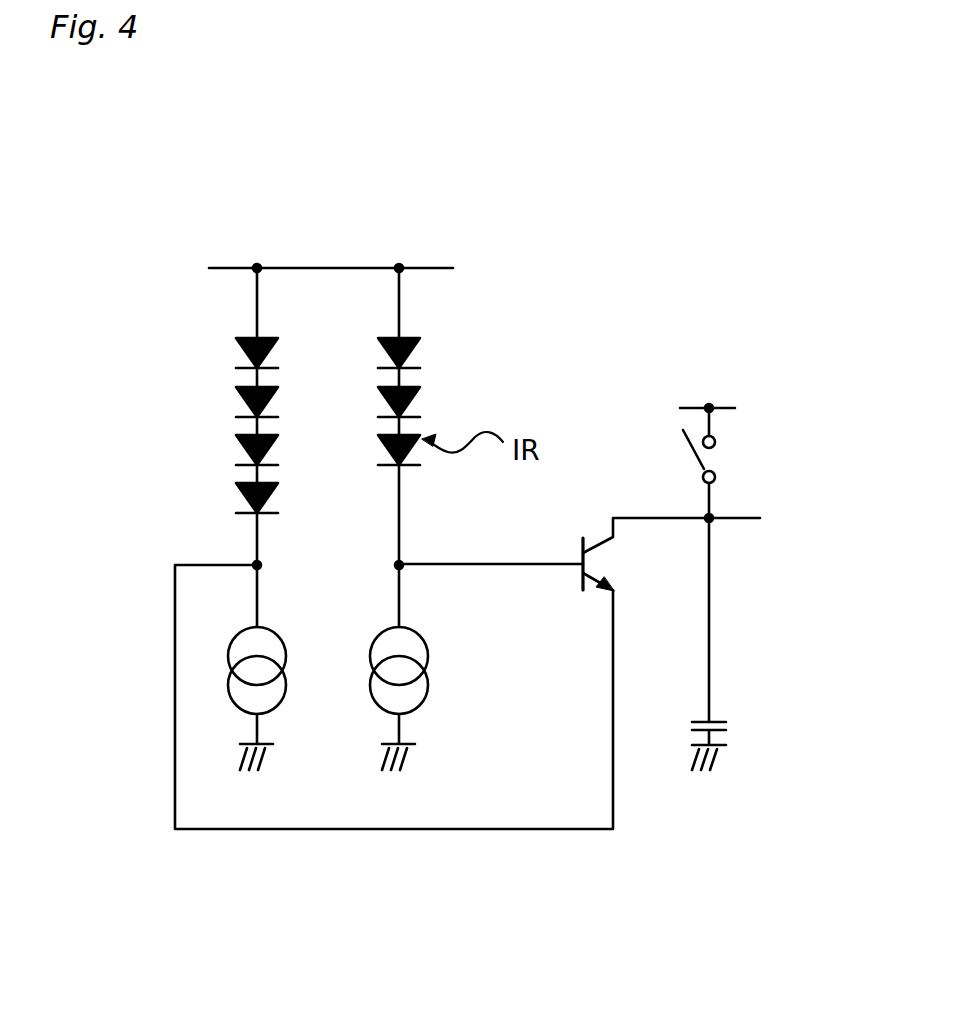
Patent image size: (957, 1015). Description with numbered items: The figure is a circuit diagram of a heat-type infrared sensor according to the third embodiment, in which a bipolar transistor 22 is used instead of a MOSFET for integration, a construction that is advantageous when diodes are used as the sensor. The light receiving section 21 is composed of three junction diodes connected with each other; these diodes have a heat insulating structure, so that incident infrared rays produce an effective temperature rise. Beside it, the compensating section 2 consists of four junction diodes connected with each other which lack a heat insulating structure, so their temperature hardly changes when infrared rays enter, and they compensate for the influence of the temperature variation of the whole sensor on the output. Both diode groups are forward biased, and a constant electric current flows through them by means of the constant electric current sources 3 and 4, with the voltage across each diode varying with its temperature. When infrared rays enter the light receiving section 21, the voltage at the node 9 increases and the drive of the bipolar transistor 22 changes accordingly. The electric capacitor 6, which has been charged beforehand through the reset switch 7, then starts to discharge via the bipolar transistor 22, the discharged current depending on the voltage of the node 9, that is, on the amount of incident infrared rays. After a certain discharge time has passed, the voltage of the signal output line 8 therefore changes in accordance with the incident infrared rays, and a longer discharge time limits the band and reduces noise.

The compensating section 2 is at (225, 398).
The light receiving section 21 is at (432, 388).
The bipolar transistor 22 is at (591, 532).
The reset switch 7 is at (735, 427).
The signal output line 8 is at (759, 510).
The electric capacitor 6 is at (722, 707).
The node 9 is at (408, 567).
The constant electric current source 3 is at (433, 648).
The constant electric current source 4 is at (213, 678).